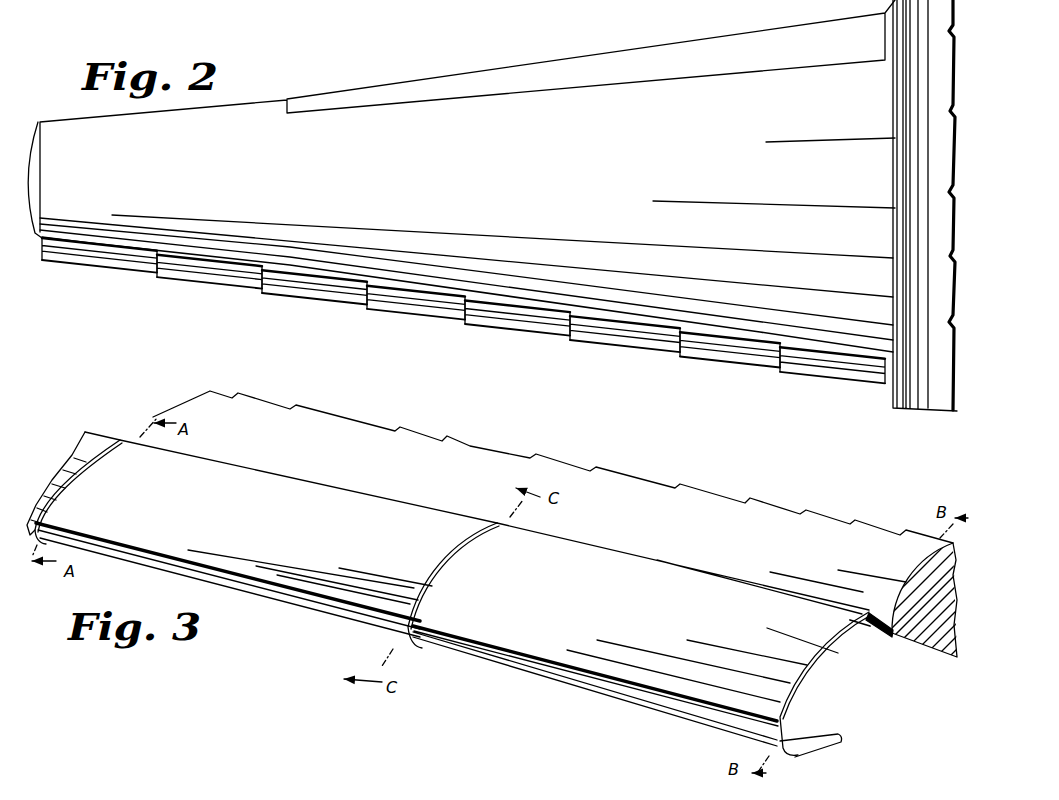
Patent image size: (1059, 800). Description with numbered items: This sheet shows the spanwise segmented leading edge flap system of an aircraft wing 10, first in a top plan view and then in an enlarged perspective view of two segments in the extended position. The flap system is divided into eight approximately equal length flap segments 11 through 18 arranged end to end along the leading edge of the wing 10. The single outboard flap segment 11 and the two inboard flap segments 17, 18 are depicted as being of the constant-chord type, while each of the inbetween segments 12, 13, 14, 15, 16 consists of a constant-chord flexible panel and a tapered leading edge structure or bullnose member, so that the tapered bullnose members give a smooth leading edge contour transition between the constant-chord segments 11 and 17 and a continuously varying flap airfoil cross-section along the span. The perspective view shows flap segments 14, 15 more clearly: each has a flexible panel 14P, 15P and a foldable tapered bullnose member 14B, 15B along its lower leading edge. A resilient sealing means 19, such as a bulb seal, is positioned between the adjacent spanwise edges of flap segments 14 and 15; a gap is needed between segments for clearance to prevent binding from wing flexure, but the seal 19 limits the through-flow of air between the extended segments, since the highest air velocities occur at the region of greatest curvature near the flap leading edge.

In FIG. 2, the aircraft wing 10 is at (521, 189).
In FIG. 3, the aircraft wing 10 is at (653, 524).
In FIG. 2, the outboard flap segment 11 is at (118, 247).
In FIG. 2, the flap segment 12 is at (222, 252).
In FIG. 2, the flap segment 13 is at (323, 270).
In FIG. 3, the flap segment 13 is at (61, 454).
In FIG. 2, the flap segment 14 is at (437, 293).
In FIG. 2, the flap segment 15 is at (528, 297).
In FIG. 2, the flap segment 16 is at (618, 313).
In FIG. 2, the inboard flap segment 17 is at (710, 330).
In FIG. 2, the inboard flap segment 18 is at (810, 348).
In FIG. 3, the resilient sealing means 19 is at (93, 445).
In FIG. 3, the flexible panel 14P is at (300, 536).
In FIG. 3, the bullnose member 14B is at (281, 612).
In FIG. 3, the flexible panel 15P is at (560, 614).
In FIG. 3, the bullnose member 15B is at (577, 688).